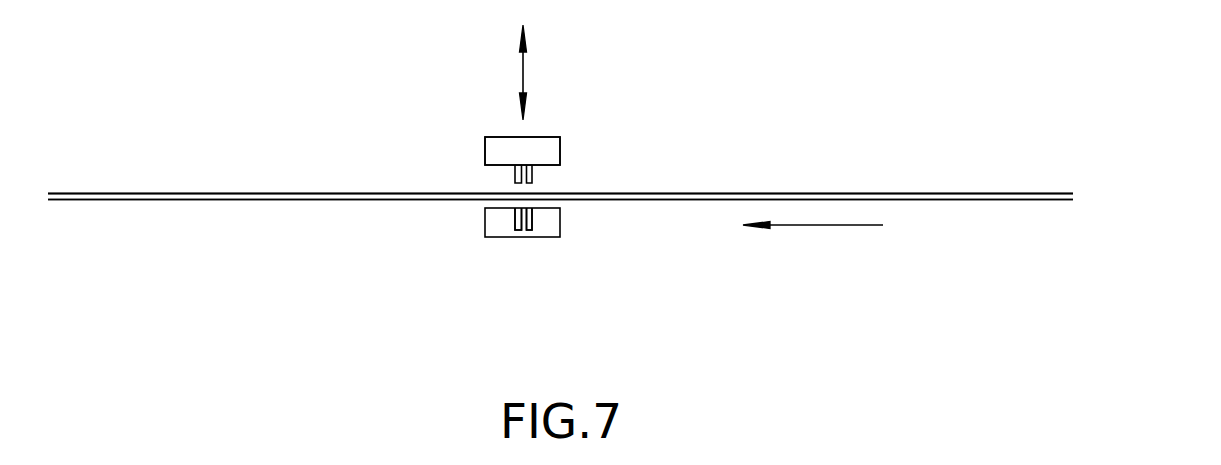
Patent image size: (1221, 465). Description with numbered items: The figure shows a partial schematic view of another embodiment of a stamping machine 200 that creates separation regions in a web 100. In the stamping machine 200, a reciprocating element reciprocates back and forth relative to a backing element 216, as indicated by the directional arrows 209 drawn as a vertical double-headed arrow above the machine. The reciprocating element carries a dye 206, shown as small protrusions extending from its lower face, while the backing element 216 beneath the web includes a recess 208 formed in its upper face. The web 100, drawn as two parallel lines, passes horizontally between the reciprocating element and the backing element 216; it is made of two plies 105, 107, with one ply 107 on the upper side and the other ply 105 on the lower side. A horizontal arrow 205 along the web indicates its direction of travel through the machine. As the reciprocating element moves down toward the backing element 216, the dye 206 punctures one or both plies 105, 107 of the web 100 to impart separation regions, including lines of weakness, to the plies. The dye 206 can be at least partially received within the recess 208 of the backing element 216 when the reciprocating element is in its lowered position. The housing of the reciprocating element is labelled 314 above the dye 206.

The web 100 is at (1085, 197).
The ply 105 is at (90, 200).
The ply 107 is at (105, 193).
The stamping machine 200 is at (844, 363).
The direction of web travel 205 is at (825, 225).
The dye 206 is at (478, 175).
The recess 208 is at (570, 232).
The directional arrows 209 is at (523, 72).
The backing element 216 is at (526, 234).
The tool housing 314 is at (543, 137).